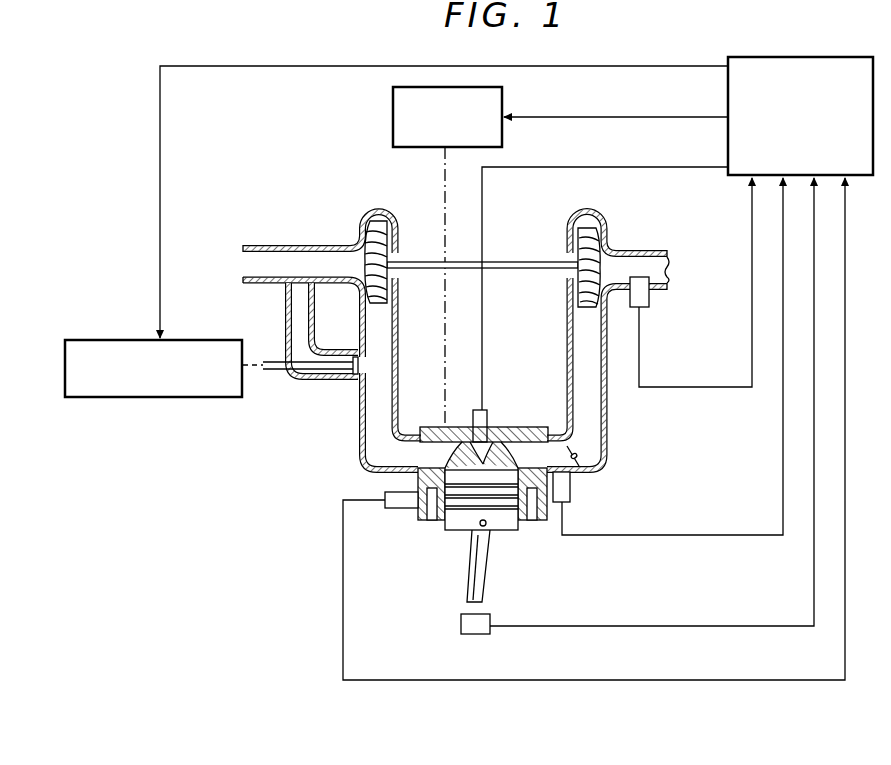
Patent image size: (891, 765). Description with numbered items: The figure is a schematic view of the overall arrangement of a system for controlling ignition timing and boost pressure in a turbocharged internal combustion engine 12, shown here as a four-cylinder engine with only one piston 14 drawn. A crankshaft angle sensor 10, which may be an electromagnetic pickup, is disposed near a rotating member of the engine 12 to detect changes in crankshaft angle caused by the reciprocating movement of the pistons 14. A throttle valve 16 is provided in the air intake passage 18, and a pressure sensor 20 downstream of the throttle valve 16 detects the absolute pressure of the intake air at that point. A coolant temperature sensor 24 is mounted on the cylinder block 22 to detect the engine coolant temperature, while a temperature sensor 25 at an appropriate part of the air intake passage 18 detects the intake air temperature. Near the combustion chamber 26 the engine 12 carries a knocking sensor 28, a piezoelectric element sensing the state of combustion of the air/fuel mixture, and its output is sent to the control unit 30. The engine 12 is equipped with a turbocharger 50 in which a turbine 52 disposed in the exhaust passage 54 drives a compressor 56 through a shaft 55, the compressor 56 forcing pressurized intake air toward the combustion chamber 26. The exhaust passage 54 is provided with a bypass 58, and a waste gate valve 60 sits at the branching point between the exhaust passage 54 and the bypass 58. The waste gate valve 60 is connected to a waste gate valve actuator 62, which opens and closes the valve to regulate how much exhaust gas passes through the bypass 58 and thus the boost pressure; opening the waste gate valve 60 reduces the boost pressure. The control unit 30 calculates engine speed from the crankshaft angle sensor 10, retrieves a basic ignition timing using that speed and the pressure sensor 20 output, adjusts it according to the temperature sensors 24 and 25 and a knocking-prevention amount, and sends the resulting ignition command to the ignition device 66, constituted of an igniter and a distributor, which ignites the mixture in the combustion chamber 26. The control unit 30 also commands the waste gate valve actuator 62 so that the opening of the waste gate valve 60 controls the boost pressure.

The crankshaft angle sensor 10 is at (465, 634).
The internal combustion engine 12 is at (532, 514).
The piston 14 is at (502, 535).
The throttle valve 16 is at (580, 450).
The air intake passage 18 is at (608, 411).
The pressure sensor 20 is at (571, 490).
The cylinder block 22 is at (429, 522).
The coolant temperature sensor 24 is at (385, 510).
The temperature sensor 25 is at (649, 298).
The combustion chamber 26 is at (458, 468).
The knocking sensor 28 is at (488, 410).
The control unit 30 is at (792, 57).
The turbocharger 50 is at (493, 243).
The turbine 52 is at (364, 234).
The exhaust passage 54 is at (358, 450).
The shaft 55 is at (530, 262).
The compressor 56 is at (598, 245).
The bypass 58 is at (285, 322).
The waste gate valve 60 is at (345, 380).
The waste gate valve actuator 62 is at (160, 397).
The ignition device 66 is at (393, 120).